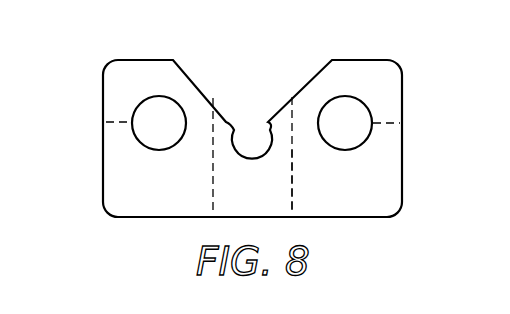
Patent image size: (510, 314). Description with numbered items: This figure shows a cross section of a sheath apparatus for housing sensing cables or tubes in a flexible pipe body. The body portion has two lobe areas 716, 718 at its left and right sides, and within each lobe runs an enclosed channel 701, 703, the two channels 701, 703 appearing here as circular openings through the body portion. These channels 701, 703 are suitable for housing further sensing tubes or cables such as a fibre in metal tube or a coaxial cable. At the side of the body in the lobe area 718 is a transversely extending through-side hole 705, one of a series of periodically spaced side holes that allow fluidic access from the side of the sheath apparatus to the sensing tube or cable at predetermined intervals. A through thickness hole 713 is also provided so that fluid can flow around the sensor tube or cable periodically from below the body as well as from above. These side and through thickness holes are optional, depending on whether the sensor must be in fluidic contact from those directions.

The enclosed channel 701 is at (160, 103).
The enclosed channel 703 is at (345, 103).
The transversely extending through-side hole 705 is at (402, 133).
The through thickness hole 713 is at (294, 191).
The lobe area 716 is at (104, 76).
The lobe area 718 is at (402, 78).